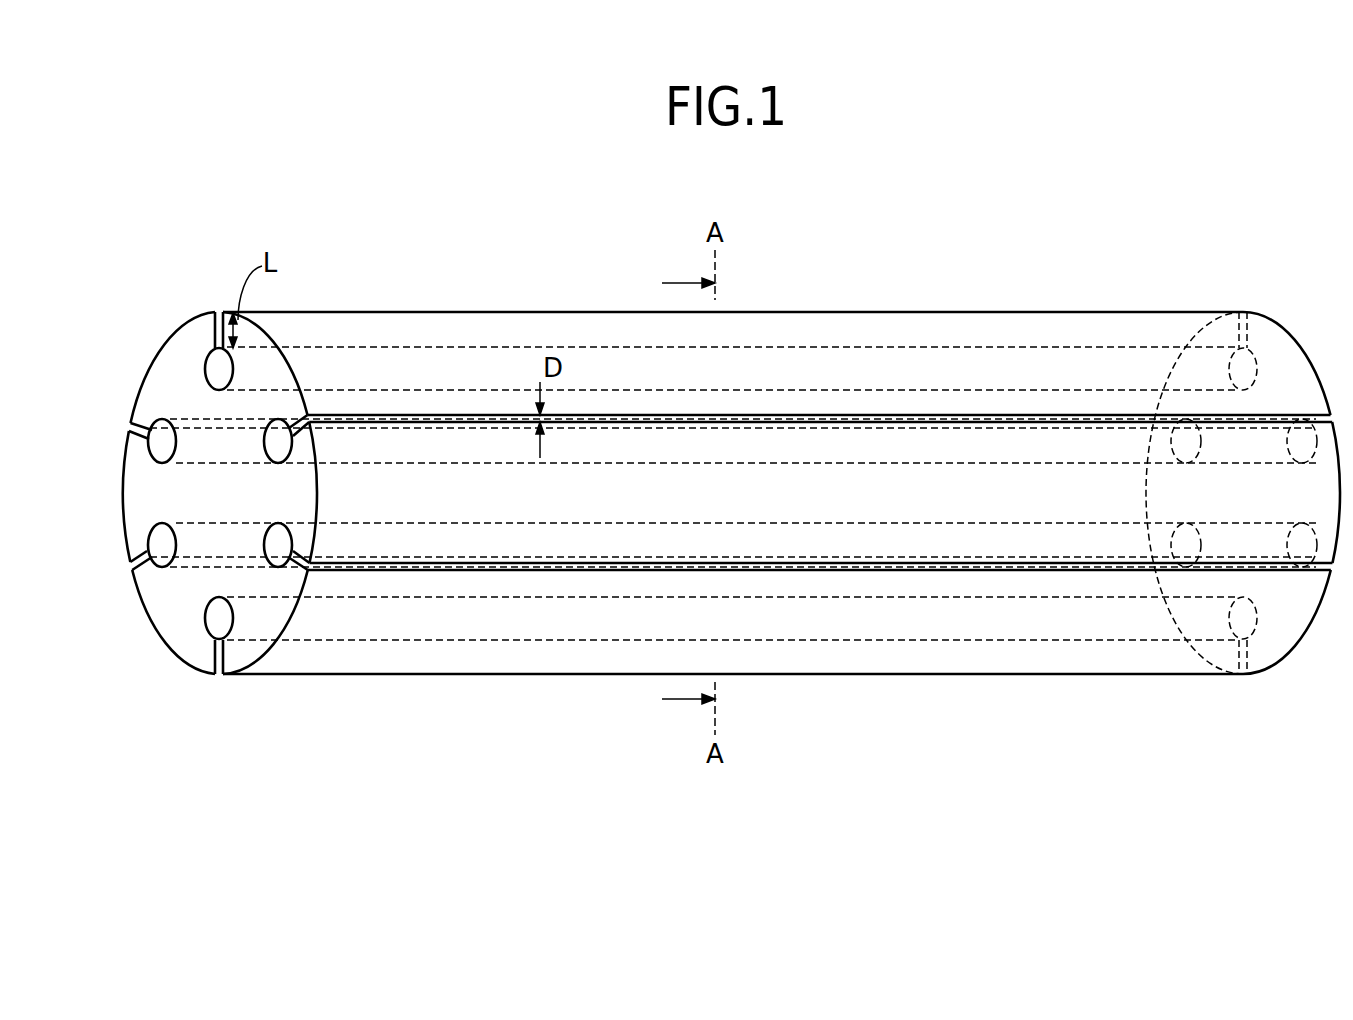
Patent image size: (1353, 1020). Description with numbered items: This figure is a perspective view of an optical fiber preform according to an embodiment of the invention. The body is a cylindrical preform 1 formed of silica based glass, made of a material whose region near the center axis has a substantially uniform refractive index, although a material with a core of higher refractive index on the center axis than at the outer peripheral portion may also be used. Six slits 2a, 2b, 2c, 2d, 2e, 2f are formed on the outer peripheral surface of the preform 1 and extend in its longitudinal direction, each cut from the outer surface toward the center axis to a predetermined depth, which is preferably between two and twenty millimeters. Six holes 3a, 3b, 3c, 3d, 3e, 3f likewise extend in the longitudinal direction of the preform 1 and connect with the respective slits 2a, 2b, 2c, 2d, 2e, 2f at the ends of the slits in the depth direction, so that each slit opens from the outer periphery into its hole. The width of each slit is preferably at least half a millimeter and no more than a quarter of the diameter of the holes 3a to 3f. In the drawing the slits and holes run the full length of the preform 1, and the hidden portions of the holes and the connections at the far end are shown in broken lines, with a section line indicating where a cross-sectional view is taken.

The preform 1 is at (1048, 318).
The slit 2a is at (214, 324).
The slit 2b is at (305, 418).
The slit 2c is at (301, 574).
The slit 2d is at (214, 664).
The slit 2e is at (134, 564).
The slit 2f is at (135, 420).
The hole 3a is at (206, 372).
The hole 3b is at (293, 447).
The hole 3c is at (293, 550).
The hole 3d is at (206, 620).
The hole 3e is at (148, 540).
The hole 3f is at (148, 453).